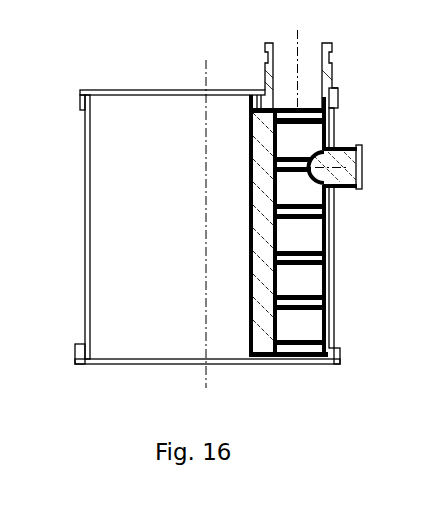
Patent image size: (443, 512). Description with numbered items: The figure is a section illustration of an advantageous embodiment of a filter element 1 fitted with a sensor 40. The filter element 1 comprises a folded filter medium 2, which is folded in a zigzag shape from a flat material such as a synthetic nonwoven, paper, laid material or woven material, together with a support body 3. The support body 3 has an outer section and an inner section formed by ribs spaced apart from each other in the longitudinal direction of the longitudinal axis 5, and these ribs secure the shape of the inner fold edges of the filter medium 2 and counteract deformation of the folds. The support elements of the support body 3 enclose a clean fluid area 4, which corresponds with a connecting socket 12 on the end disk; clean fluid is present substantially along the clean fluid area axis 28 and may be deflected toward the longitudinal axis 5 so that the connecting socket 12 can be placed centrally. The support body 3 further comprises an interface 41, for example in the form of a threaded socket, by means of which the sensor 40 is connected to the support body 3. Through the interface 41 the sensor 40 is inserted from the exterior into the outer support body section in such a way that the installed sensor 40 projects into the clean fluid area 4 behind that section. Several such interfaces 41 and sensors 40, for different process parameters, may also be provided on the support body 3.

The filter element 1 is at (61, 119).
The filter medium 2 is at (88, 257).
The support body 3 is at (328, 323).
The clean fluid area 4 is at (297, 335).
The longitudinal axis 5 is at (200, 72).
The connecting socket 12 is at (265, 62).
The clean fluid area axis 28 is at (294, 58).
The sensor 40 is at (339, 168).
The interface 41 is at (337, 188).